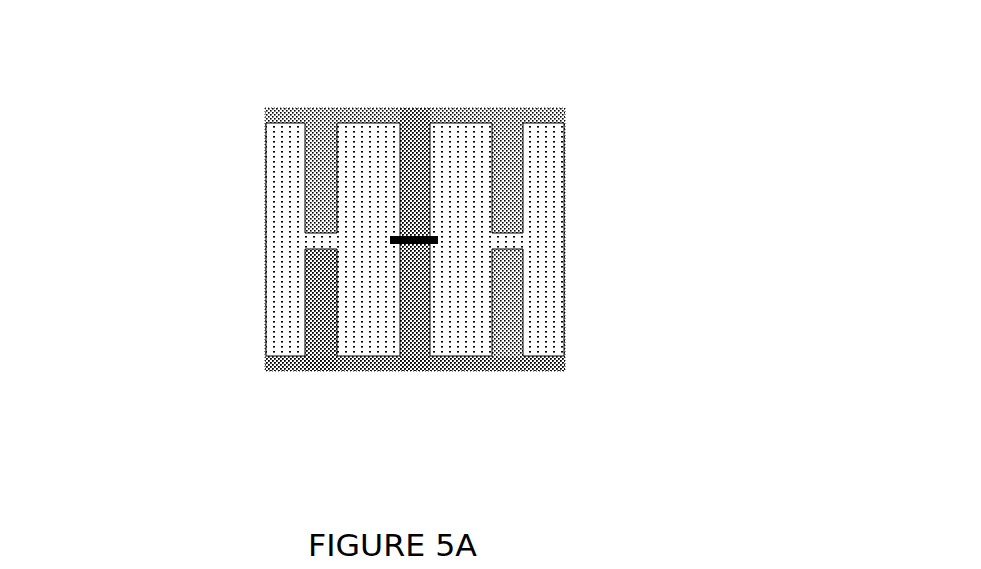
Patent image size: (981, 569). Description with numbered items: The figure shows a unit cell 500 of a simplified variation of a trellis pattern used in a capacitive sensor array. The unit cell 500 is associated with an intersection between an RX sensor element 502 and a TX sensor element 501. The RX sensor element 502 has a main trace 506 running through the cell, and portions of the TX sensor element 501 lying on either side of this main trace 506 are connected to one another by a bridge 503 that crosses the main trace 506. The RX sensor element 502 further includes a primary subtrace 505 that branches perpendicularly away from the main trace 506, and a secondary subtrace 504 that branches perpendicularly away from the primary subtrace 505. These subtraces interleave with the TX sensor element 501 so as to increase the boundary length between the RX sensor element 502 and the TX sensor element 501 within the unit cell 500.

The unit cell 500 is at (409, 247).
The TX sensor element 501 is at (258, 237).
The RX sensor element 502 is at (410, 96).
The bridge 503 is at (441, 246).
The secondary subtrace 504 is at (327, 327).
The primary subtrace 505 is at (359, 362).
The main trace 506 is at (418, 315).